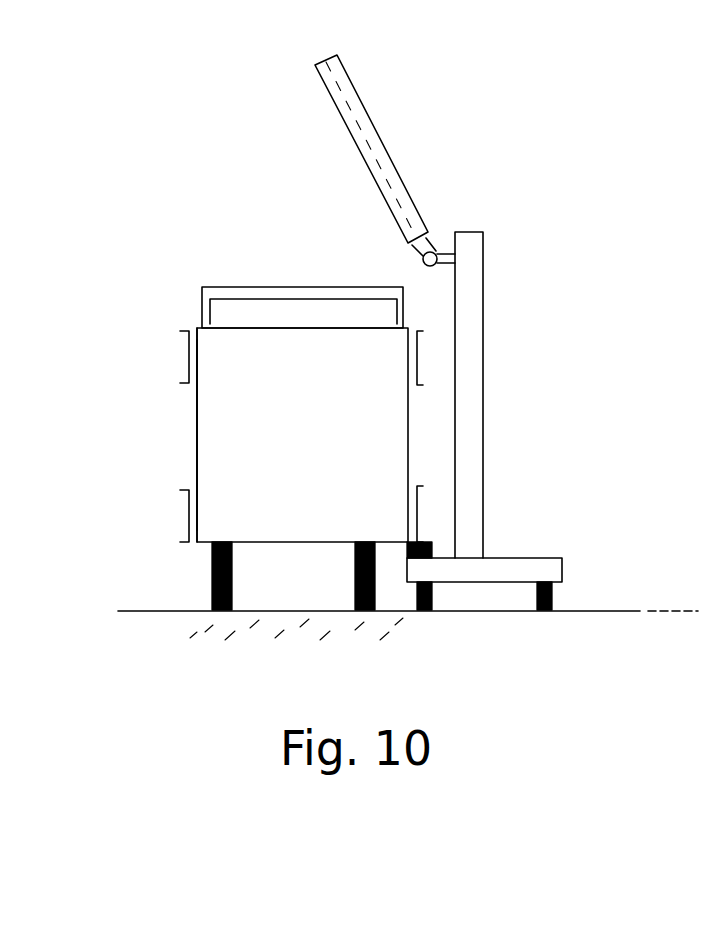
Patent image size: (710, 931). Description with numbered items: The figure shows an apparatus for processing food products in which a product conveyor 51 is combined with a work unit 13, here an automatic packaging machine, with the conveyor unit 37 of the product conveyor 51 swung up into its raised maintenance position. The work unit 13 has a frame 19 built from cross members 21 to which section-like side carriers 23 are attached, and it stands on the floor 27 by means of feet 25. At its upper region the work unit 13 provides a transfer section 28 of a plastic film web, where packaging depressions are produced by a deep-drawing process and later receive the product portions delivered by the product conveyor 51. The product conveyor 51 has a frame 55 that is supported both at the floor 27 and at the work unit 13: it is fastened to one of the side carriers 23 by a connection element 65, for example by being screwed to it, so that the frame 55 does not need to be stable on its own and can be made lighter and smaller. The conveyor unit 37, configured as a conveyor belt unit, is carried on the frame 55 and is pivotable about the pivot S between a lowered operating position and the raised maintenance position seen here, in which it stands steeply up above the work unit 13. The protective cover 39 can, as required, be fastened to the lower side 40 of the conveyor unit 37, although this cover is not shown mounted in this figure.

The work unit 13 is at (110, 366).
The frame 19 is at (186, 466).
The cross members 21 is at (215, 413).
The side carriers 23 is at (188, 350).
The feet 25 is at (208, 590).
The floor 27 is at (604, 606).
The transfer section 28 is at (232, 313).
The protective cover 39 is at (210, 288).
The conveyor unit 37 is at (395, 124).
The lower side 40 is at (373, 183).
The pivot point S is at (432, 253).
The product conveyor 51 is at (524, 289).
The frame 55 is at (492, 441).
The connection element 65 is at (433, 547).